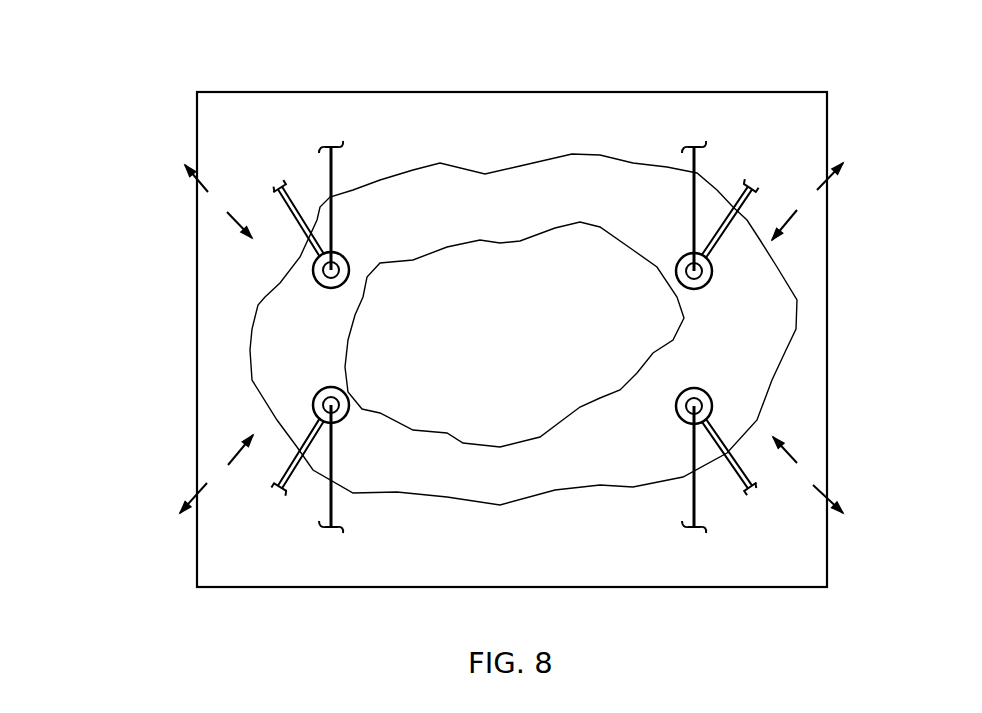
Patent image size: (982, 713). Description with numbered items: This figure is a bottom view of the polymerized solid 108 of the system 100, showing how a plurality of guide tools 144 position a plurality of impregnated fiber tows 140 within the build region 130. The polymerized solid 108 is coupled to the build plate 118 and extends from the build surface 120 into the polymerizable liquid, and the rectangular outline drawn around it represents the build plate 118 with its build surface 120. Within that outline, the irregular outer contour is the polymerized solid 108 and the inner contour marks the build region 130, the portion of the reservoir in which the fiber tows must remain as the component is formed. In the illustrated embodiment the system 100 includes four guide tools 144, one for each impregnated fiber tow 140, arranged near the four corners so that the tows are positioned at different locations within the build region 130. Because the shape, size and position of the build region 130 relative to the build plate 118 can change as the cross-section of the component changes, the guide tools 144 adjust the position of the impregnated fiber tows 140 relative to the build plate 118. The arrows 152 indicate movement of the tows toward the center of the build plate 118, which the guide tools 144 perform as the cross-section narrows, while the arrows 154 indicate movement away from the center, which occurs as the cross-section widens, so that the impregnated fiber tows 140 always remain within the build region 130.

The system 100 is at (126, 106).
The polymerized solid 108 is at (455, 504).
The build plate 118 is at (827, 350).
The build surface 120 is at (226, 278).
The build region 130 is at (482, 334).
The impregnated fiber tows 140 is at (332, 170).
The guide tools 144 is at (290, 183).
The direction toward center of build plate 152 is at (240, 225).
The direction away from center of build plate 154 is at (198, 179).